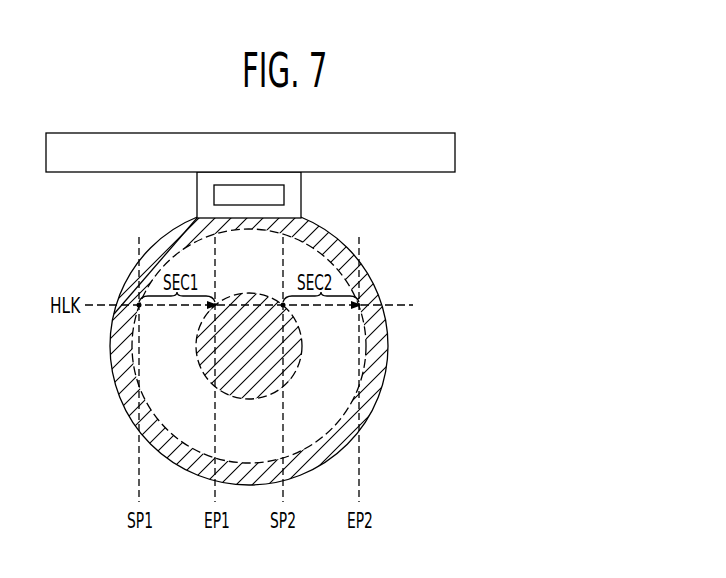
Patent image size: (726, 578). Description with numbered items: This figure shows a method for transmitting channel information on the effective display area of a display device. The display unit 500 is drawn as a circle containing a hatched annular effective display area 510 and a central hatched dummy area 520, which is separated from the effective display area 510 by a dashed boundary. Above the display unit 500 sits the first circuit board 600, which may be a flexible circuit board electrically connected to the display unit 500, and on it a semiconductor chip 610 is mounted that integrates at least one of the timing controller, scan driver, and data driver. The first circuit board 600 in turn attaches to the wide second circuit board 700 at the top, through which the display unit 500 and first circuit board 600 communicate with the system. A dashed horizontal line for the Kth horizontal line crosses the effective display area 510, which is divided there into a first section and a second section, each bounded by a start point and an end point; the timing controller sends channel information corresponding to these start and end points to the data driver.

The display unit 500 is at (340, 350).
The effective display area 510 is at (303, 257).
The dummy area 520 is at (278, 481).
The first circuit board 600 is at (287, 179).
The semiconductor chip 610 is at (287, 198).
The second circuit board 700 is at (455, 151).